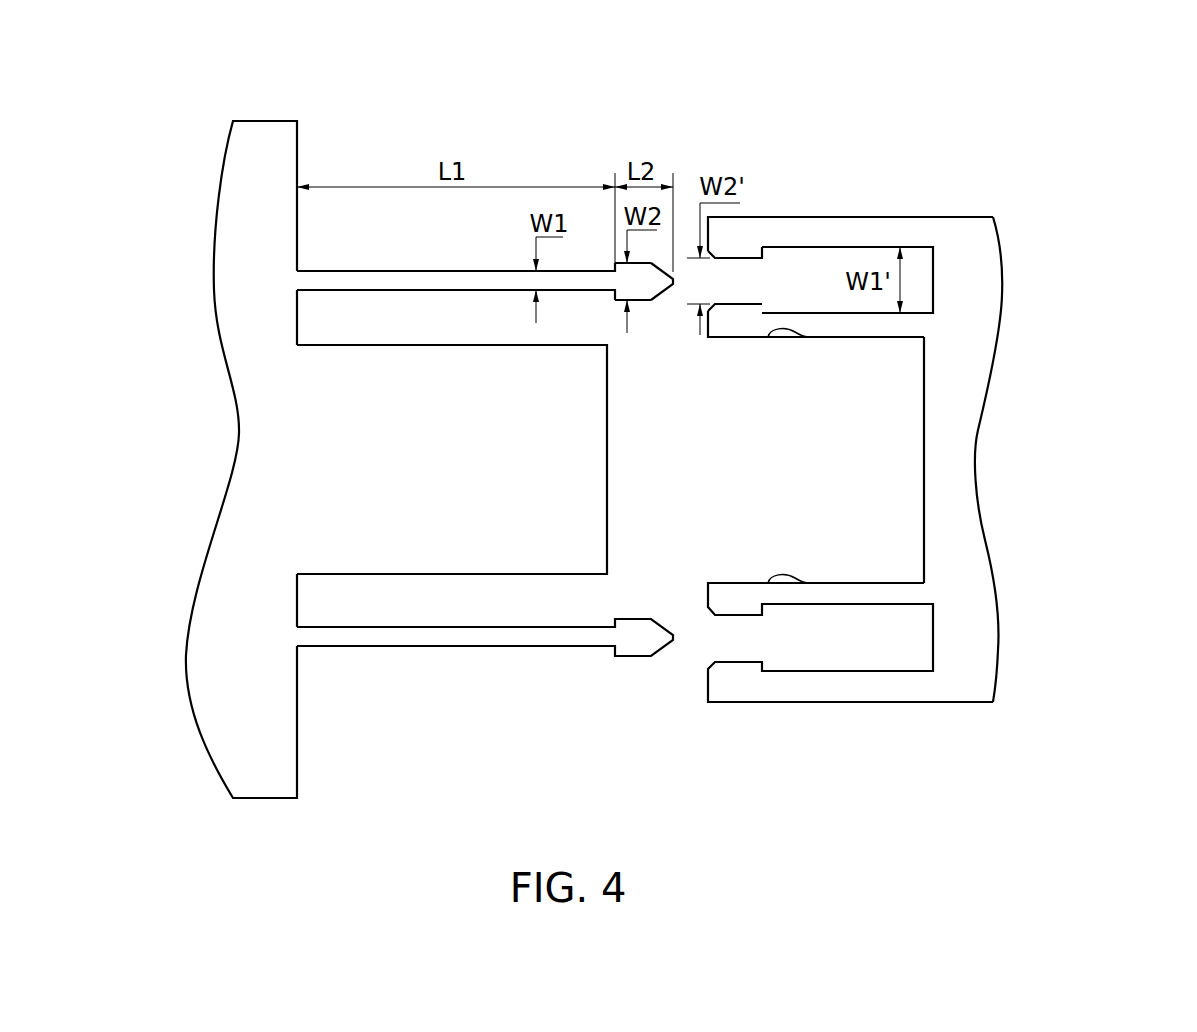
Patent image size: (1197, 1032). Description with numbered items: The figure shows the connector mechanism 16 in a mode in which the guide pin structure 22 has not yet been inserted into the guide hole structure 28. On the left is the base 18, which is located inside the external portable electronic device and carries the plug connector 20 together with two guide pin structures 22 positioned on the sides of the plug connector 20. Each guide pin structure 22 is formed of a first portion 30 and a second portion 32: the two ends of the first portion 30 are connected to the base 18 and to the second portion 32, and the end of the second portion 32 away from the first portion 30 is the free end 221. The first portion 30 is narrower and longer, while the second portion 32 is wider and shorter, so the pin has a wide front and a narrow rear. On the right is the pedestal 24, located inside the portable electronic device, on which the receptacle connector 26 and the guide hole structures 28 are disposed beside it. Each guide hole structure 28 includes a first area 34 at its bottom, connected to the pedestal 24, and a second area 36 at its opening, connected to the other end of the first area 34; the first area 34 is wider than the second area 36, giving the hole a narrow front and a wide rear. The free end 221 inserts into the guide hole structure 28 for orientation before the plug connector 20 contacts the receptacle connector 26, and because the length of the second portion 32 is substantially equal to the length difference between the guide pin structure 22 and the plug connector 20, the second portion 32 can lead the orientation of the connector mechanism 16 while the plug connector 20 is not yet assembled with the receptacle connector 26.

The connector mechanism 16 is at (1087, 93).
The base 18 is at (258, 440).
The plug connector 20 is at (592, 497).
The guide pin structure 22 is at (519, 459).
The free end 221 is at (642, 292).
The pedestal 24 is at (950, 429).
The receptacle connector 26 is at (892, 486).
The guide hole structure 28 is at (850, 425).
The first portion 30 is at (492, 282).
The second portion 32 is at (656, 318).
The first area 34 is at (761, 148).
The second area 36 is at (727, 245).